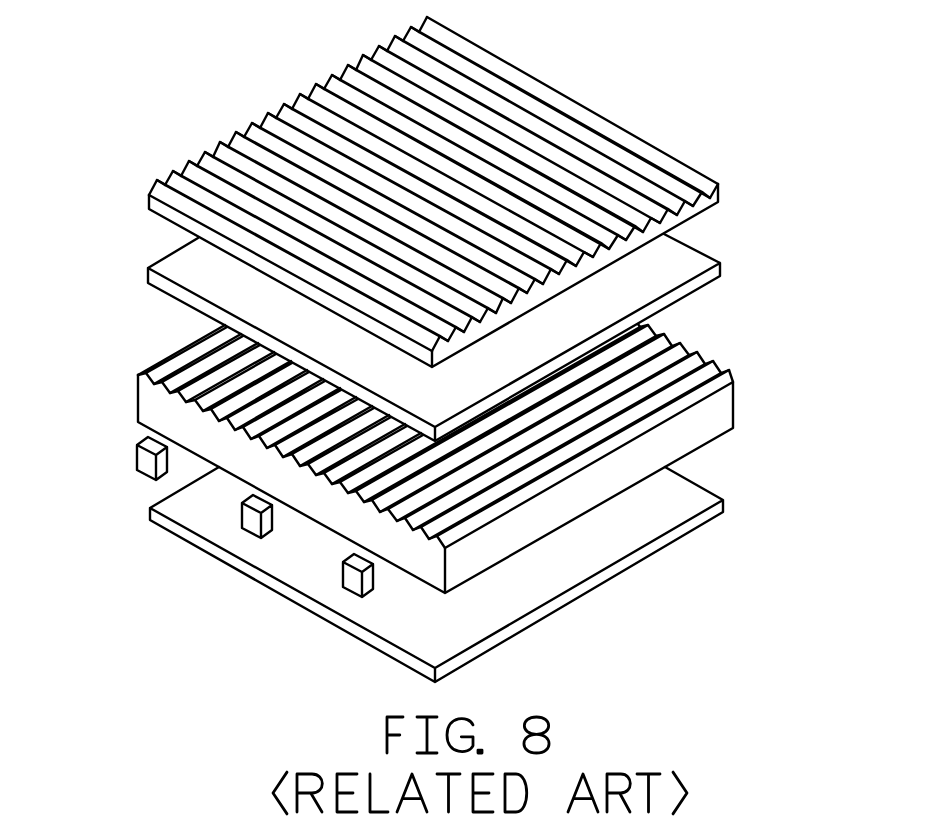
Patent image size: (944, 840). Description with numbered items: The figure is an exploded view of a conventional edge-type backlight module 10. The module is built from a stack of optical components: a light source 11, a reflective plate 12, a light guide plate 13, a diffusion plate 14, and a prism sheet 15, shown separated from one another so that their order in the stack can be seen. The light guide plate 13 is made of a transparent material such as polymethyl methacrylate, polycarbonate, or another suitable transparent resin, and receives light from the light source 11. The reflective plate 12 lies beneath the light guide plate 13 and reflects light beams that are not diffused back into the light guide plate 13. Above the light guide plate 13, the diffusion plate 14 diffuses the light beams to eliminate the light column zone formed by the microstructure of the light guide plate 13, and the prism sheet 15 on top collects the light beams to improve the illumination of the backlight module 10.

The backlight module 10 is at (288, 39).
The light source 11 is at (156, 455).
The reflective plate 12 is at (688, 502).
The light guide plate 13 is at (718, 412).
The diffusion plate 14 is at (682, 263).
The prism sheet 15 is at (713, 198).